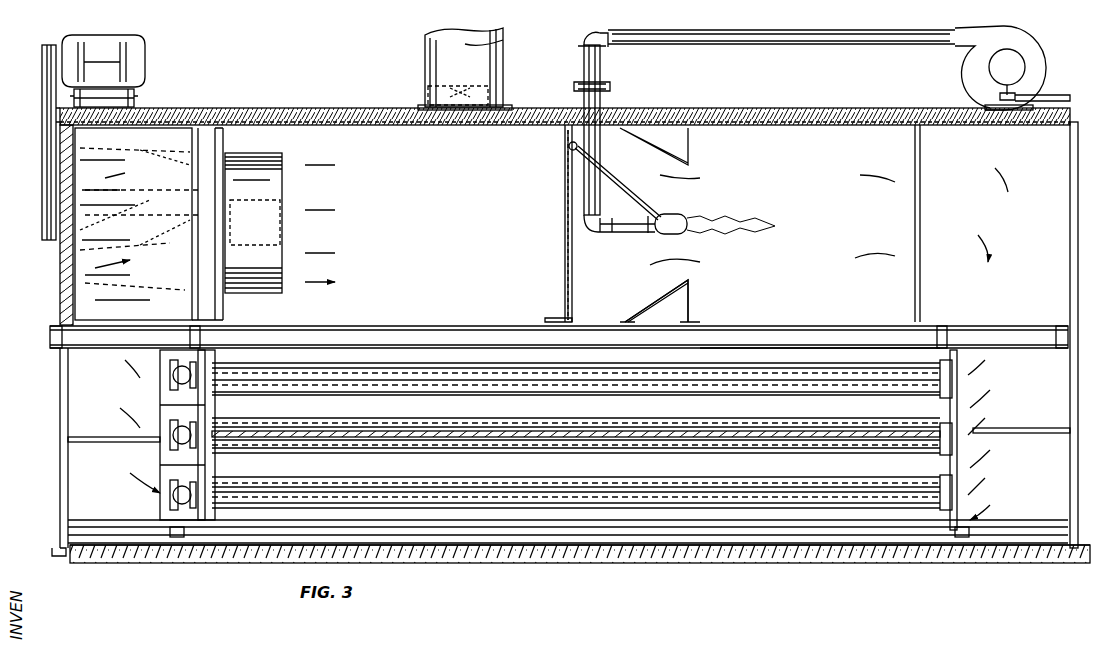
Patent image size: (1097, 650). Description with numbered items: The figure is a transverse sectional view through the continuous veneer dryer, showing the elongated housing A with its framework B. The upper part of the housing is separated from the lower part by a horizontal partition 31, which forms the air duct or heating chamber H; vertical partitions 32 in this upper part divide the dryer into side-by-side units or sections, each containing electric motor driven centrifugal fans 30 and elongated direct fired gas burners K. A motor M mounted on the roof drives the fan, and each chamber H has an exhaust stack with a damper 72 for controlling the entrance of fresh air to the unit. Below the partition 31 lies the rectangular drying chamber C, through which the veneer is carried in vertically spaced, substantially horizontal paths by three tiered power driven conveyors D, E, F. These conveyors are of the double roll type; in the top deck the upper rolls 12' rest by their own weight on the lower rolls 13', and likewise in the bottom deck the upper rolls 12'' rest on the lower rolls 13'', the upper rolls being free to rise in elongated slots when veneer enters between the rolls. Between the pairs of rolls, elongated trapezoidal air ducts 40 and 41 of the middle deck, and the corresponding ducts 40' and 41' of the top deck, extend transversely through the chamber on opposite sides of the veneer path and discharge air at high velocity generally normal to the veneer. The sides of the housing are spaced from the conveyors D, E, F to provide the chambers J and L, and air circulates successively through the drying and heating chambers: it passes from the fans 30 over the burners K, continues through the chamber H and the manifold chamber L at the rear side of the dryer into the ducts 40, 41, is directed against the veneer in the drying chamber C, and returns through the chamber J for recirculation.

The drive motor M is at (422, 60).
The damper 72 is at (428, 96).
The housing A is at (730, 118).
The vertical partitions 32 is at (790, 133).
The centrifugal fans 30 is at (258, 170).
The air duct H is at (440, 231).
The gas burners K is at (652, 238).
The framework B is at (768, 334).
The chamber L is at (1012, 362).
The horizontal partition 31 is at (398, 326).
The top rolls of top deck 12' is at (576, 351).
The top conveyor D is at (545, 372).
The air duct of top deck 40' is at (820, 340).
The bottom rolls of top deck 13' is at (582, 388).
The air duct 40 is at (576, 412).
The air duct of top deck 41' is at (576, 417).
The middle conveyor E is at (268, 428).
The drying chamber C is at (296, 471).
The top rolls of bottom deck 12'' is at (576, 469).
The bottom conveyor F is at (410, 488).
The air duct 41 is at (576, 479).
The bottom rolls of bottom deck 13'' is at (582, 501).
The chamber J is at (90, 464).